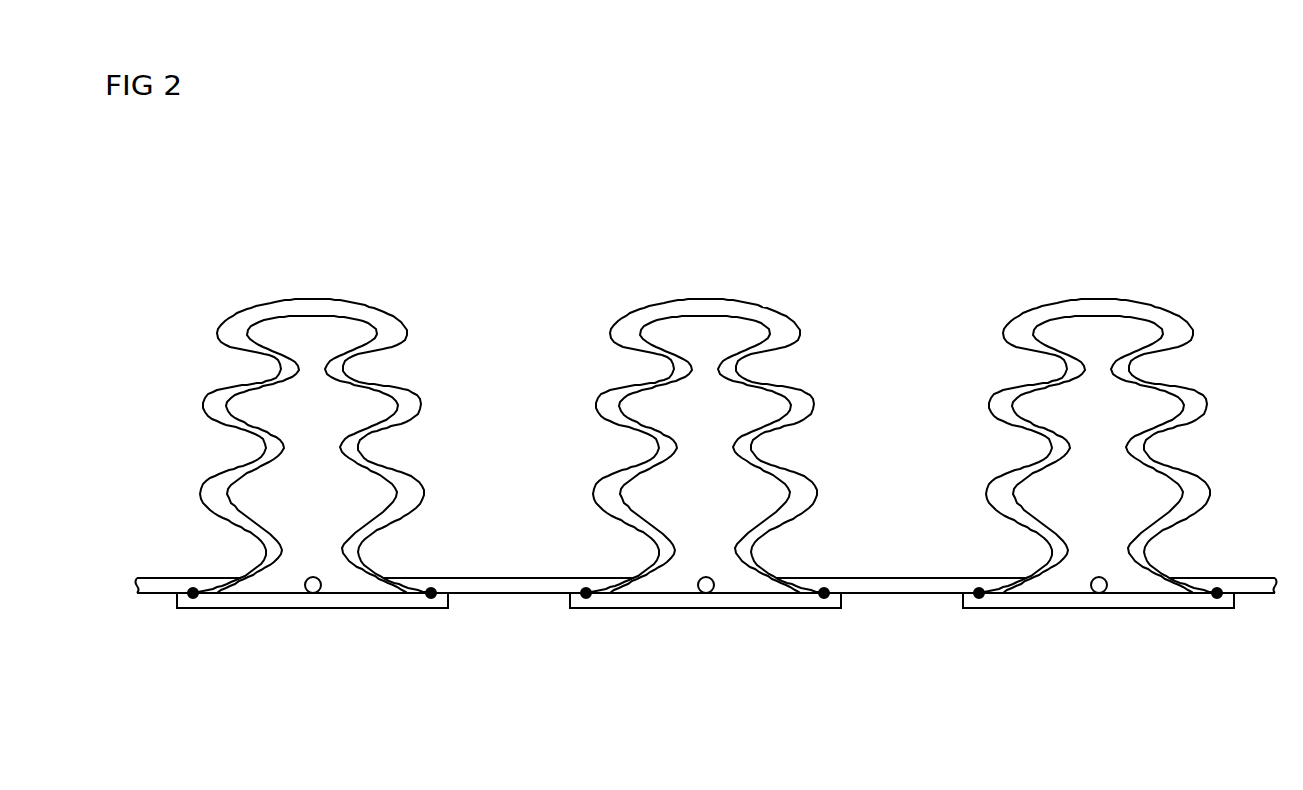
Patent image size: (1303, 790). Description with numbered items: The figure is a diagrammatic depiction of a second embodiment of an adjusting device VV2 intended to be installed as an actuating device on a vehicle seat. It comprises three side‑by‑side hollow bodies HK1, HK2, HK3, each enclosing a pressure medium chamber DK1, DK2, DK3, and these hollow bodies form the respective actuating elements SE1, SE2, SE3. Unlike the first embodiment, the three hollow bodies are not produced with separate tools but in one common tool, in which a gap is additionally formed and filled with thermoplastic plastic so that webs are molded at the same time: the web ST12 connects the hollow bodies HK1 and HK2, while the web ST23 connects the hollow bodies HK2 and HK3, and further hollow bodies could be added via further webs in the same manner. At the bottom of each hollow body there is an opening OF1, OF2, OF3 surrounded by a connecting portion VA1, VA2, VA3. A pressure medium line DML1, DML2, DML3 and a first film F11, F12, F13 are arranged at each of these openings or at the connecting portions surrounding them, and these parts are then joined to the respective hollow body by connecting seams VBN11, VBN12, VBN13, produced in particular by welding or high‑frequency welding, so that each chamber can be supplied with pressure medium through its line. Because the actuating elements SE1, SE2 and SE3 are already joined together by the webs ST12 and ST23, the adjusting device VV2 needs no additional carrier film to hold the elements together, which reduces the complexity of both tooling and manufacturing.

The adjusting device VV2 is at (207, 222).
The actuating element SE1 is at (412, 300).
The actuating element SE2 is at (721, 450).
The actuating element SE3 is at (1114, 450).
The hollow body HK1 is at (327, 306).
The hollow body HK2 is at (705, 405).
The hollow body HK3 is at (1098, 405).
The pressure medium chamber DK1 is at (310, 410).
The pressure medium chamber DK2 is at (738, 454).
The pressure medium chamber DK3 is at (1131, 454).
The opening OF1 is at (290, 568).
The opening OF2 is at (705, 527).
The opening OF3 is at (1098, 527).
The connecting portion VA1 is at (193, 590).
The connecting portion VA2 is at (565, 550).
The connecting portion VA3 is at (958, 550).
The connecting seam VBN11 is at (431, 600).
The connecting seam VBN12 is at (848, 635).
The connecting seam VBN13 is at (1241, 635).
The pressure medium line DML1 is at (313, 597).
The pressure medium line DML2 is at (730, 630).
The pressure medium line DML3 is at (1123, 630).
The first film F11 is at (245, 608).
The first film F12 is at (705, 638).
The first film F13 is at (1098, 638).
The web ST12 is at (482, 588).
The web ST23 is at (901, 547).